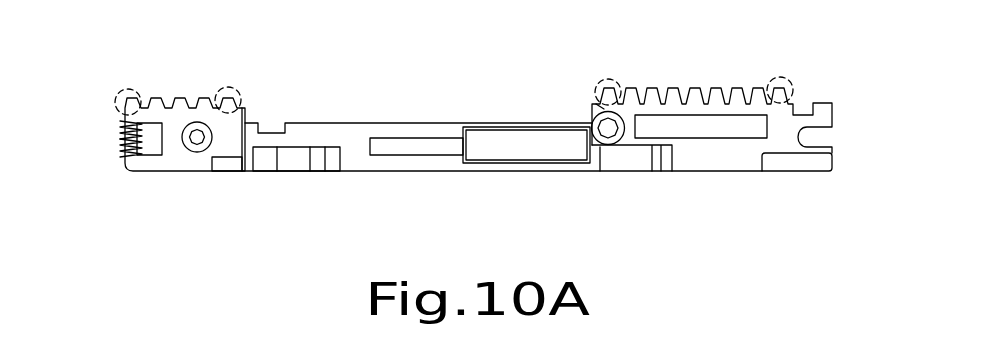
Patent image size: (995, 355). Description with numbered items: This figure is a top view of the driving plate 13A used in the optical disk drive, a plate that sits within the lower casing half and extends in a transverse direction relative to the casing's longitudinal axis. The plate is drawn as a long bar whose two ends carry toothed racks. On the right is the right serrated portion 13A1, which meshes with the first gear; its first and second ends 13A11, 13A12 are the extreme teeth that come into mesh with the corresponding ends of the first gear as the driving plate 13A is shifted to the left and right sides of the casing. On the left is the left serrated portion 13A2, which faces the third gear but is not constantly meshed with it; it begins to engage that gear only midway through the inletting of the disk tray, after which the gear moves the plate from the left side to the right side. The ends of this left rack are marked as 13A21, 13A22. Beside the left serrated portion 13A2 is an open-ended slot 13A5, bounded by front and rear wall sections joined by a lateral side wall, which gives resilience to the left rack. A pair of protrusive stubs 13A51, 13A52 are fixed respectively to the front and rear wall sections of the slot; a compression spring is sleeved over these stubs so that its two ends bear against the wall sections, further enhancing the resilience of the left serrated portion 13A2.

The driving plate 13A is at (428, 158).
The right serrated portion 13A1 is at (718, 88).
The first end of the right serrated portion 13A11 is at (782, 77).
The second end of the right serrated portion 13A12 is at (608, 79).
The left serrated portion 13A2 is at (205, 106).
The end tooth of second rack 13A21 is at (230, 87).
The end tooth of second rack 13A22 is at (133, 89).
The open-ended slot 13A5 is at (147, 140).
The protrusive stub 13A51 is at (116, 151).
The protrusive stub 13A52 is at (116, 127).